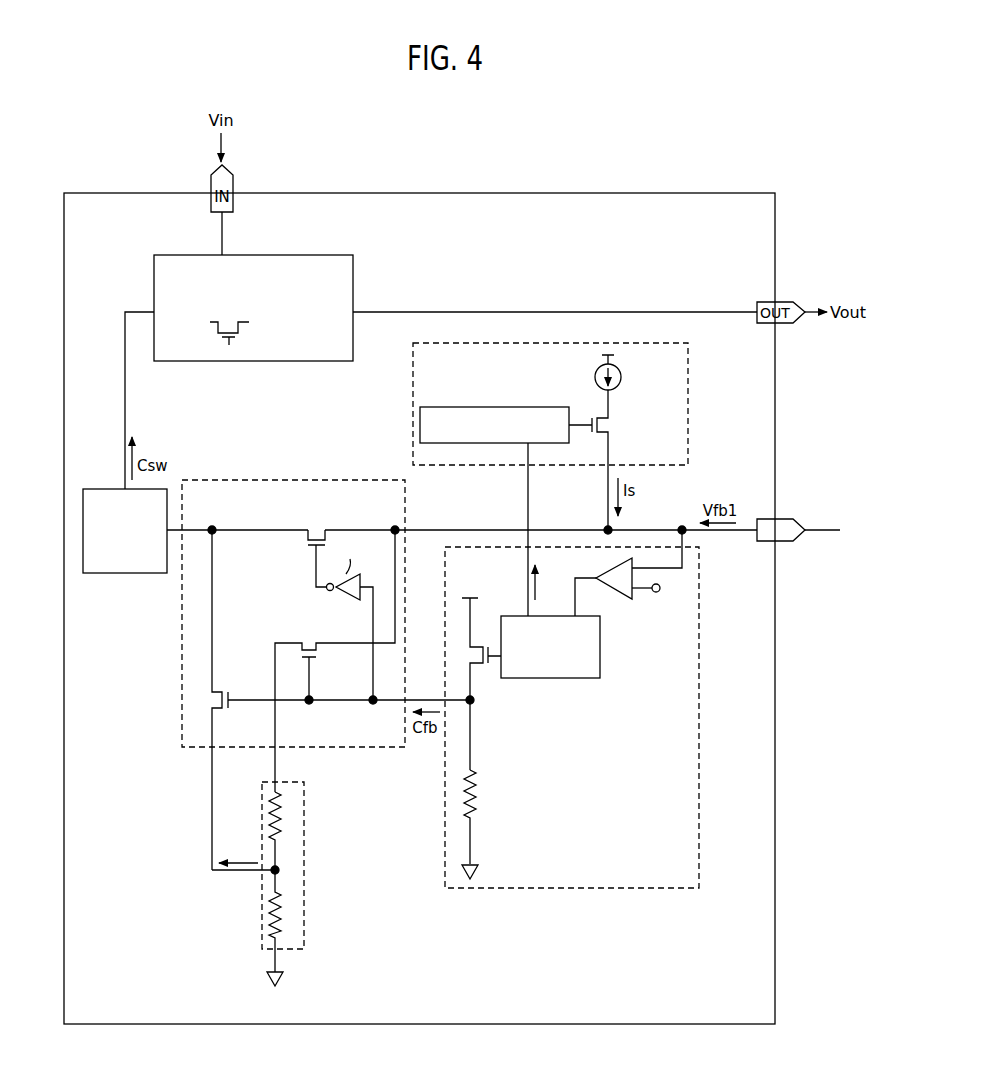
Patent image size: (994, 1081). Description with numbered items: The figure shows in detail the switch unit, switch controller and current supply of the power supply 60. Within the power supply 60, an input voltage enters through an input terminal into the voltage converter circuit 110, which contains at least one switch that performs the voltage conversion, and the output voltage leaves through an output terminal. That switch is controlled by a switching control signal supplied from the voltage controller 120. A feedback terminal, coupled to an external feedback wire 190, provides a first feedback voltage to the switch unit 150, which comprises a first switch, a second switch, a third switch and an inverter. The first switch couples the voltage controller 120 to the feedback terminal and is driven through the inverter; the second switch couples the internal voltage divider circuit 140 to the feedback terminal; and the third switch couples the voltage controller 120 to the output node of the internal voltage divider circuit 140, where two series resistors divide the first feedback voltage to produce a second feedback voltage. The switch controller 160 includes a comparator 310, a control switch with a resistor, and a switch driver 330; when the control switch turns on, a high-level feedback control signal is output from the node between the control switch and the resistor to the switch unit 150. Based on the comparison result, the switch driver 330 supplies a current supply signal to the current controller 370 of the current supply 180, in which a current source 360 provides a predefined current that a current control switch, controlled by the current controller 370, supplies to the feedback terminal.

The power supply 60 is at (485, 193).
The voltage converter circuit 110 is at (353, 276).
The voltage controller 120 is at (135, 573).
The internal voltage divider circuit 140 is at (304, 888).
The switch unit 150 is at (290, 480).
The switch controller 160 is at (572, 688).
The current supply 180 is at (519, 436).
The external feedback wire 190 is at (832, 530).
The comparator 310 is at (620, 600).
The switch driver 330 is at (548, 678).
The current source 360 is at (621, 372).
The current controller 370 is at (528, 407).